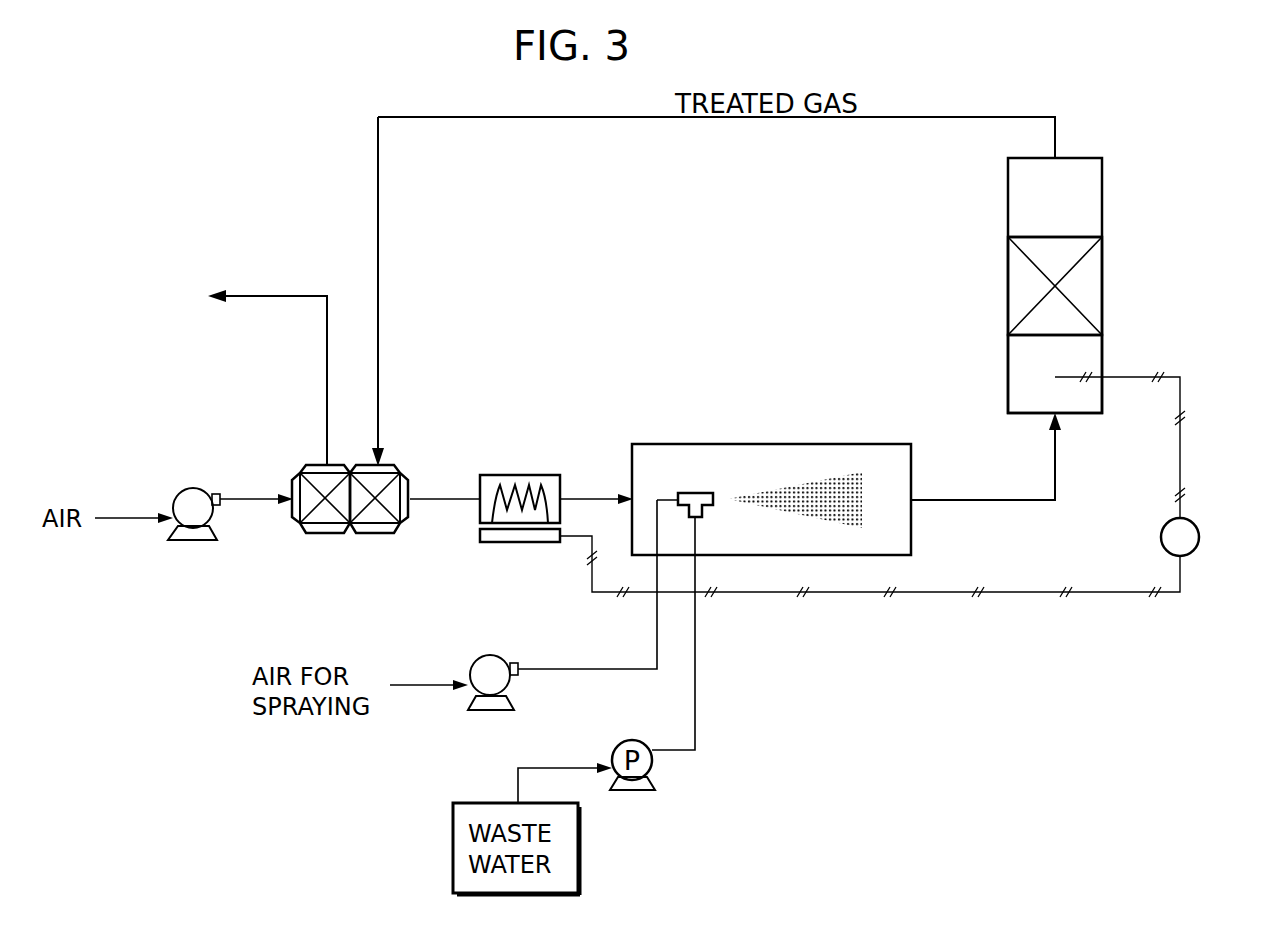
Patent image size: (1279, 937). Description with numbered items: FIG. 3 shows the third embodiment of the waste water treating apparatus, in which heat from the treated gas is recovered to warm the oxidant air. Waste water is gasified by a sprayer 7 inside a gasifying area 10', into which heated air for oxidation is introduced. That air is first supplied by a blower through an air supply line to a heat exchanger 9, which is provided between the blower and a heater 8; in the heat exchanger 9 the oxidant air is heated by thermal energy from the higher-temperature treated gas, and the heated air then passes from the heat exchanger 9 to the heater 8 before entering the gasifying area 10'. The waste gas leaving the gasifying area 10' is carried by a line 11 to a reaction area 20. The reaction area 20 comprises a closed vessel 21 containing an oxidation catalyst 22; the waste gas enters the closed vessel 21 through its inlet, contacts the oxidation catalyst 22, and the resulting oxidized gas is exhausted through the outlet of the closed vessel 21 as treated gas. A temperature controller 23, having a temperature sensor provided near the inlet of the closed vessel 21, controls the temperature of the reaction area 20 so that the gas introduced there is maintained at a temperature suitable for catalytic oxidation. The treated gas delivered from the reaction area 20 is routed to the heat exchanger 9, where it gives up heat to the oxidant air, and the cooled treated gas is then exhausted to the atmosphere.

The sprayer 7 is at (693, 492).
The heater 8 is at (521, 475).
The heat exchanger 9 is at (318, 536).
The gasifying area 10' is at (771, 432).
The line 11 is at (958, 498).
The reaction area 20 is at (1131, 201).
The closed vessel 21 is at (1086, 355).
The oxidation catalyst 22 is at (1086, 277).
The temperature controller 23 is at (1199, 533).